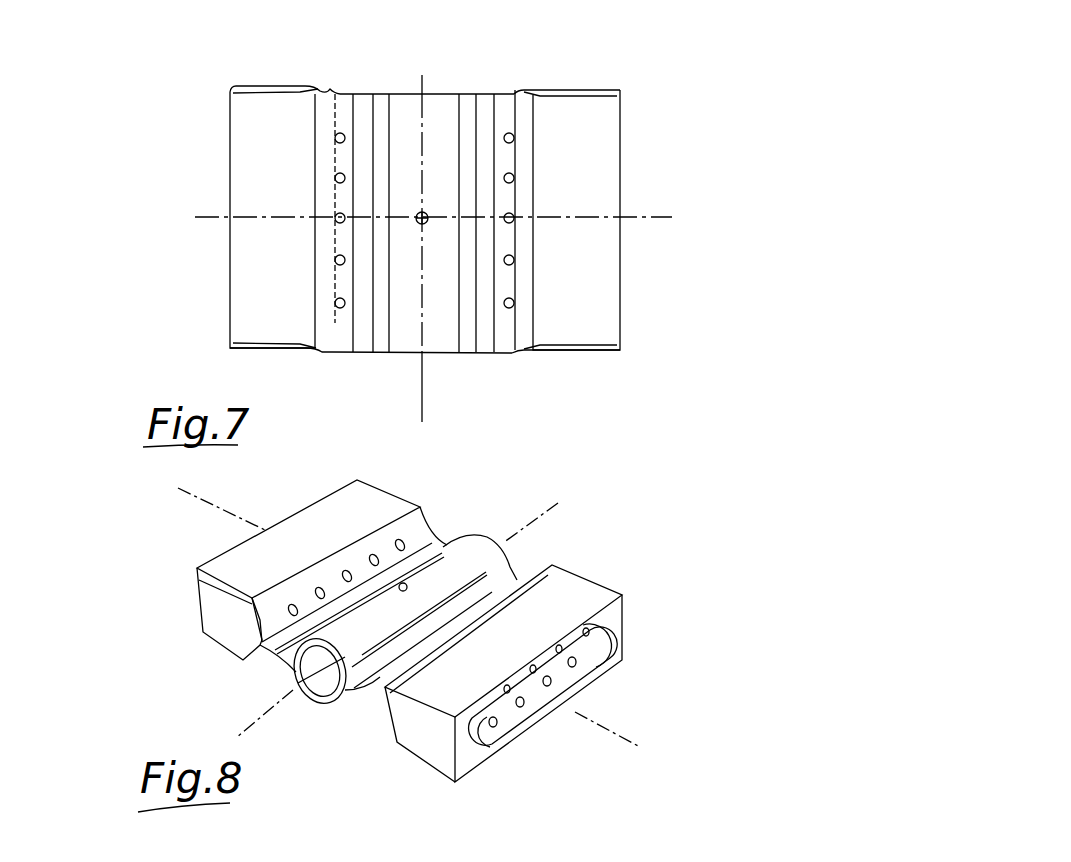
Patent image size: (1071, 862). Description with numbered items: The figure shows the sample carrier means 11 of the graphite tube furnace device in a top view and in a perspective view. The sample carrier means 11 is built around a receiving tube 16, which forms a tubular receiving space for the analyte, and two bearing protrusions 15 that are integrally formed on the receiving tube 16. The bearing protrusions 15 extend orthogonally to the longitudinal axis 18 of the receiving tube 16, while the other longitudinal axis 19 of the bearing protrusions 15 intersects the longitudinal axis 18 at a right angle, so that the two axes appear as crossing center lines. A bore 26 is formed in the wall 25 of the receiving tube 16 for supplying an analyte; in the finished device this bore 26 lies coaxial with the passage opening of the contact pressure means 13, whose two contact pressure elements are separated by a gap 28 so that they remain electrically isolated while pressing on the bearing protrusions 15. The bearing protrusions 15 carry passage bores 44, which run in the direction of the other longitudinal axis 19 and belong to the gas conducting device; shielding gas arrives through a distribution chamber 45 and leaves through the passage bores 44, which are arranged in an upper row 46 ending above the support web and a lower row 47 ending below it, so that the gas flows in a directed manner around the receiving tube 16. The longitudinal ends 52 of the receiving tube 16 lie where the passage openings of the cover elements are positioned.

In FIG. 7, the sample carrier means 11 is at (712, 138).
In FIG. 8, the sample carrier means 11 is at (657, 494).
In FIG. 8, the contact pressure means 13 is at (707, 855).
In FIG. 8, the bearing protrusions 15 is at (188, 622).
In FIG. 8, the receiving tube 16 is at (462, 566).
In FIG. 7, the longitudinal axis 18 is at (422, 397).
In FIG. 8, the longitudinal axis 18 is at (566, 494).
In FIG. 7, the other longitudinal axis 19 is at (648, 216).
In FIG. 8, the other longitudinal axis 19 is at (612, 733).
In FIG. 8, the wall 25 is at (355, 638).
In FIG. 7, the bore 26 is at (422, 224).
In FIG. 8, the bore 26 is at (405, 584).
In FIG. 8, the gap 28 is at (421, 855).
In FIG. 8, the passage bores 44 is at (346, 570).
In FIG. 8, the distribution chamber 45 is at (585, 645).
In FIG. 8, the upper row 46 is at (286, 614).
In FIG. 8, the lower row 47 is at (486, 736).
In FIG. 8, the longitudinal ends 52 is at (287, 665).